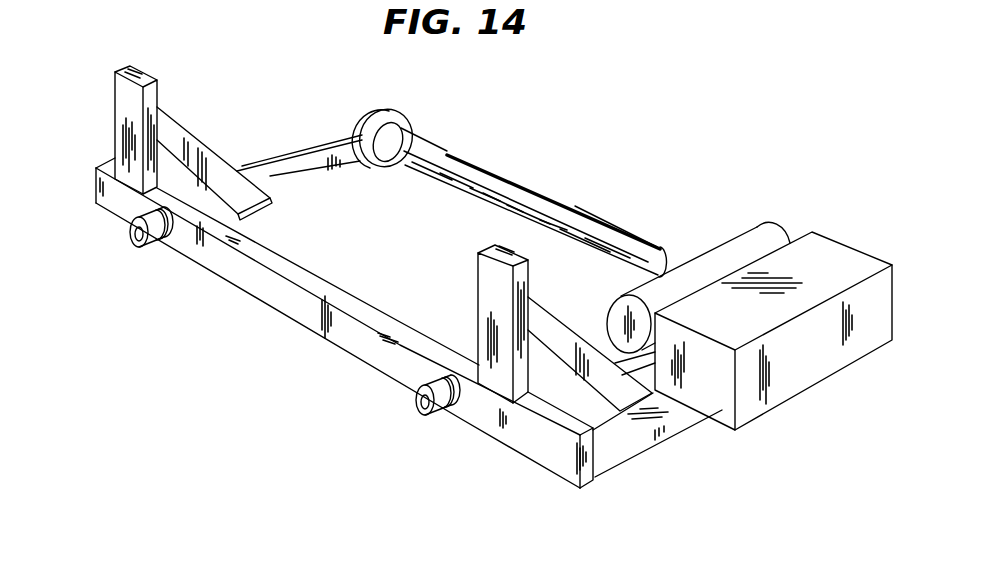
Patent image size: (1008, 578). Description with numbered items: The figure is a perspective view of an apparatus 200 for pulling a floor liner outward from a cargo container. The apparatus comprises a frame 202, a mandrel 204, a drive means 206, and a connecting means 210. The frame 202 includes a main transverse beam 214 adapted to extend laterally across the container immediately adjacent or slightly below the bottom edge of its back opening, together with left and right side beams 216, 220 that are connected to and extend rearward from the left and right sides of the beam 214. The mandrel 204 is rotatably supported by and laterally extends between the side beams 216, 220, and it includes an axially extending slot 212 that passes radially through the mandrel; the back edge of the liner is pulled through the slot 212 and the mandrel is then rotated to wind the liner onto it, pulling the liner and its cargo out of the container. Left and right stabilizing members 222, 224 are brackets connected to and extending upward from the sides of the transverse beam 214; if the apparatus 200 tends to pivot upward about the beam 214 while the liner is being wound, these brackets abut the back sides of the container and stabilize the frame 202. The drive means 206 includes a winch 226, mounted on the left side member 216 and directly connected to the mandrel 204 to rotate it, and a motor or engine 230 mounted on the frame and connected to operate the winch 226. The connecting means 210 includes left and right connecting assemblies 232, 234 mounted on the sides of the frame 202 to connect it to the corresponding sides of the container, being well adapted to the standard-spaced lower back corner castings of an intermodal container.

The apparatus 200 is at (516, 140).
The frame 202 is at (320, 363).
The mandrel 204 is at (612, 220).
The drive means 206 is at (720, 186).
The connecting means 210 is at (160, 260).
The slot 212 is at (518, 186).
The main transverse beam 214 is at (298, 301).
The left side beam 216 is at (590, 411).
The right side beam 220 is at (307, 170).
The left stabilizing member 222 is at (492, 287).
The right stabilizing member 224 is at (127, 113).
The winch 226 is at (770, 244).
The motor or engine 230 is at (803, 356).
The left connecting assembly 232 is at (424, 399).
The right connecting assembly 234 is at (131, 234).